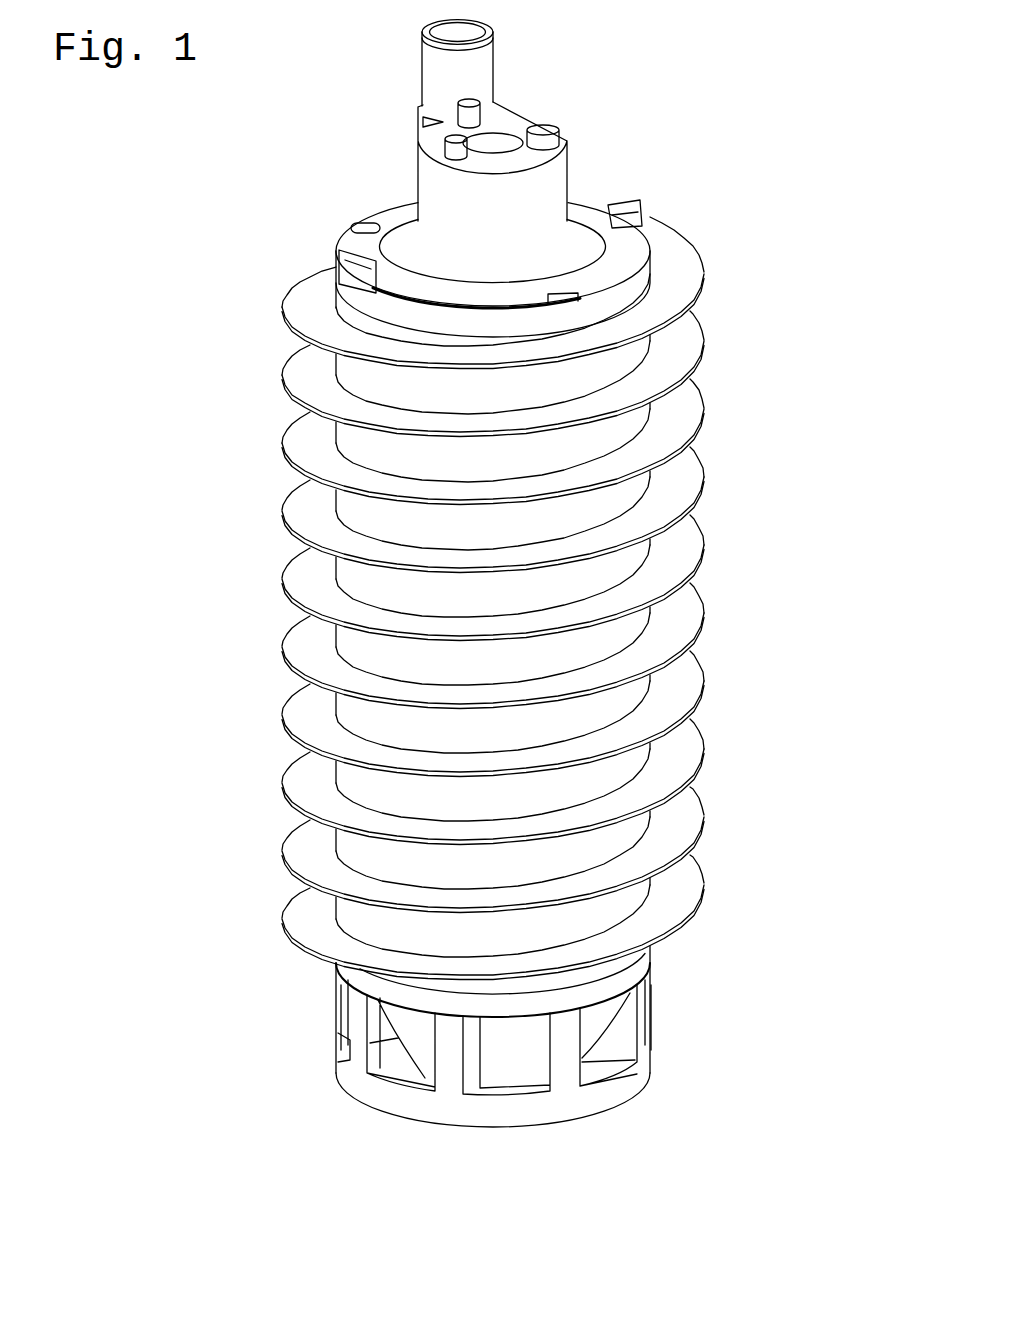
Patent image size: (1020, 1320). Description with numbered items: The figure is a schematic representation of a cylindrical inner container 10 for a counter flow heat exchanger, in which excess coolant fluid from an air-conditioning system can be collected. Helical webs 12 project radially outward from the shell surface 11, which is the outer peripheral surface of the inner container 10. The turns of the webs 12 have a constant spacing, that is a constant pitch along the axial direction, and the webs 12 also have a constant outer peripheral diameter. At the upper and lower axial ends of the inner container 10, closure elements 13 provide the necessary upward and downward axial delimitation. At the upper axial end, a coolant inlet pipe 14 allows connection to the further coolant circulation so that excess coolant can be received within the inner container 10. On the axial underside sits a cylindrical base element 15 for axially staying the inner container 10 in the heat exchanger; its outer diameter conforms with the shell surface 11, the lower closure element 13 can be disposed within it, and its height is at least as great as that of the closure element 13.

The inner container 10 is at (113, 101).
The shell surface 11 is at (432, 450).
The helical webs 12 is at (600, 470).
The closure elements 13 is at (517, 227).
The coolant inlet pipe 14 is at (437, 68).
The base element 15 is at (450, 1040).